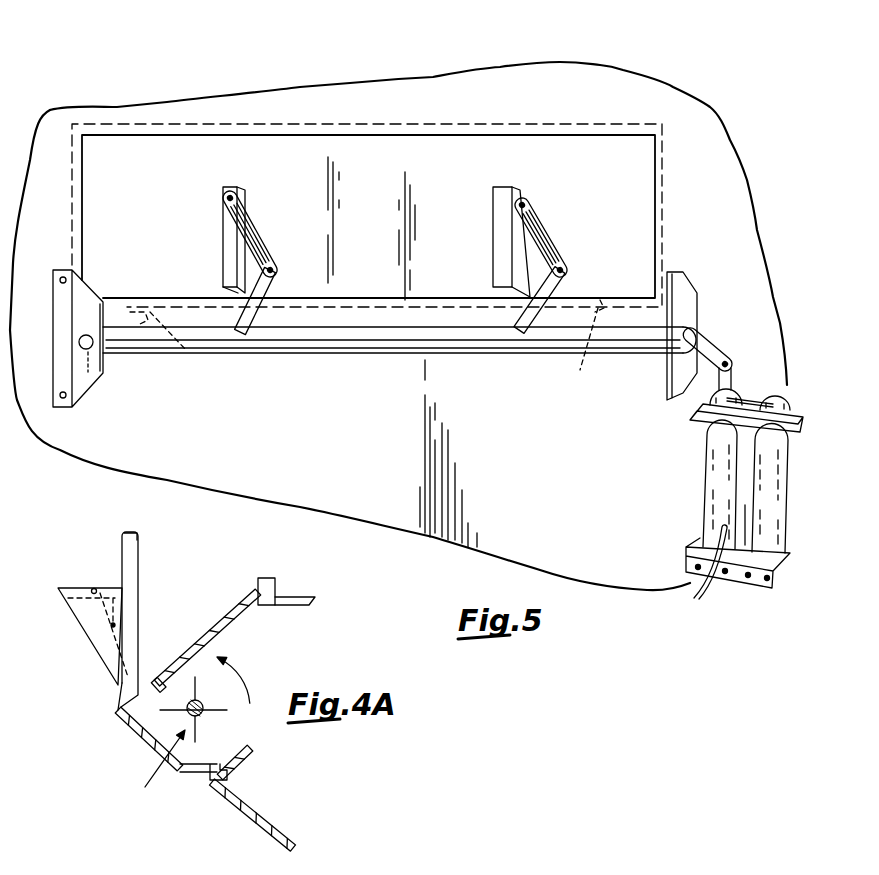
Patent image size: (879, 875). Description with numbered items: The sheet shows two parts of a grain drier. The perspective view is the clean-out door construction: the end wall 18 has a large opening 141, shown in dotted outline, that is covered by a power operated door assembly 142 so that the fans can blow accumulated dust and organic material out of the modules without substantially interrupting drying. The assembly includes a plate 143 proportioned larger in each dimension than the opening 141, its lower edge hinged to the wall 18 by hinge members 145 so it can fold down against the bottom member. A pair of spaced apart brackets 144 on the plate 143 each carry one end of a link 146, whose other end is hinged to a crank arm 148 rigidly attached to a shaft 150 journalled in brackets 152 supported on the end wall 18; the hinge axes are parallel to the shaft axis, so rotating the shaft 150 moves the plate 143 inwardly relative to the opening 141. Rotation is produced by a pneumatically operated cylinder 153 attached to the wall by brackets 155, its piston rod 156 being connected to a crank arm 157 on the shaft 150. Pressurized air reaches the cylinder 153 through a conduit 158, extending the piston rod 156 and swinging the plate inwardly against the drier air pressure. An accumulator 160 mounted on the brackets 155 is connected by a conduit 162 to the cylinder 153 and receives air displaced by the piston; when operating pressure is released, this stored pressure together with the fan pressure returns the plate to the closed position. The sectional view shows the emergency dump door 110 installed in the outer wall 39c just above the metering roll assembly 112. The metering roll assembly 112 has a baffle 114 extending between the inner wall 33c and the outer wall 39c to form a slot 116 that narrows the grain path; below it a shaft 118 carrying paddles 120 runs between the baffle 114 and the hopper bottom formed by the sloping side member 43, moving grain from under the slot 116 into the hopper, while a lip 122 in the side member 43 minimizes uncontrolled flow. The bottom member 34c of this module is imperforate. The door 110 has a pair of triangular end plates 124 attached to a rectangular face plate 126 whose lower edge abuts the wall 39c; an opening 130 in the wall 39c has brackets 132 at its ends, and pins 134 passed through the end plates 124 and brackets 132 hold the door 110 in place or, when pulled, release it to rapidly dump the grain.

In FIG. 5, the end wall 18 is at (293, 100).
In FIG. 5, the plate 143 is at (147, 145).
In FIG. 5, the opening 141 is at (83, 204).
In FIG. 5, the door assembly 142 is at (388, 227).
In FIG. 5, the brackets 144 is at (223, 233).
In FIG. 5, the link 146 is at (257, 223).
In FIG. 5, the crank arm 148 is at (262, 318).
In FIG. 5, the shaft 150 is at (383, 338).
In FIG. 5, the hinge members 145 is at (190, 353).
In FIG. 5, the brackets 152 is at (89, 373).
In FIG. 5, the crank arm 157 is at (714, 351).
In FIG. 5, the piston rod 156 is at (731, 378).
In FIG. 5, the conduit 162 is at (753, 396).
In FIG. 5, the brackets 155 is at (693, 423).
In FIG. 5, the pneumatically operated cylinder 153 is at (713, 470).
In FIG. 5, the accumulator 160 is at (767, 498).
In FIG. 5, the conduit 158 is at (700, 588).
In FIG. 4A, the opening 130 is at (131, 623).
In FIG. 4A, the outer wall 39c is at (138, 545).
In FIG. 4A, the triangular end plates 124 is at (85, 615).
In FIG. 4A, the brackets 132 is at (96, 586).
In FIG. 4A, the pins 134 is at (115, 626).
In FIG. 4A, the emergency dump door 110 is at (100, 642).
In FIG. 4A, the face plate 126 is at (107, 668).
In FIG. 4A, the slot 116 is at (131, 718).
In FIG. 4A, the sloping side member 43 is at (197, 769).
In FIG. 4A, the lip 122 is at (251, 749).
In FIG. 4A, the shaft 118 is at (204, 715).
In FIG. 4A, the paddles 120 is at (172, 713).
In FIG. 4A, the metering roll assembly 112 is at (149, 768).
In FIG. 4A, the baffle 114 is at (178, 664).
In FIG. 4A, the inner wall 33c is at (258, 593).
In FIG. 4A, the bottom member 34c is at (298, 604).